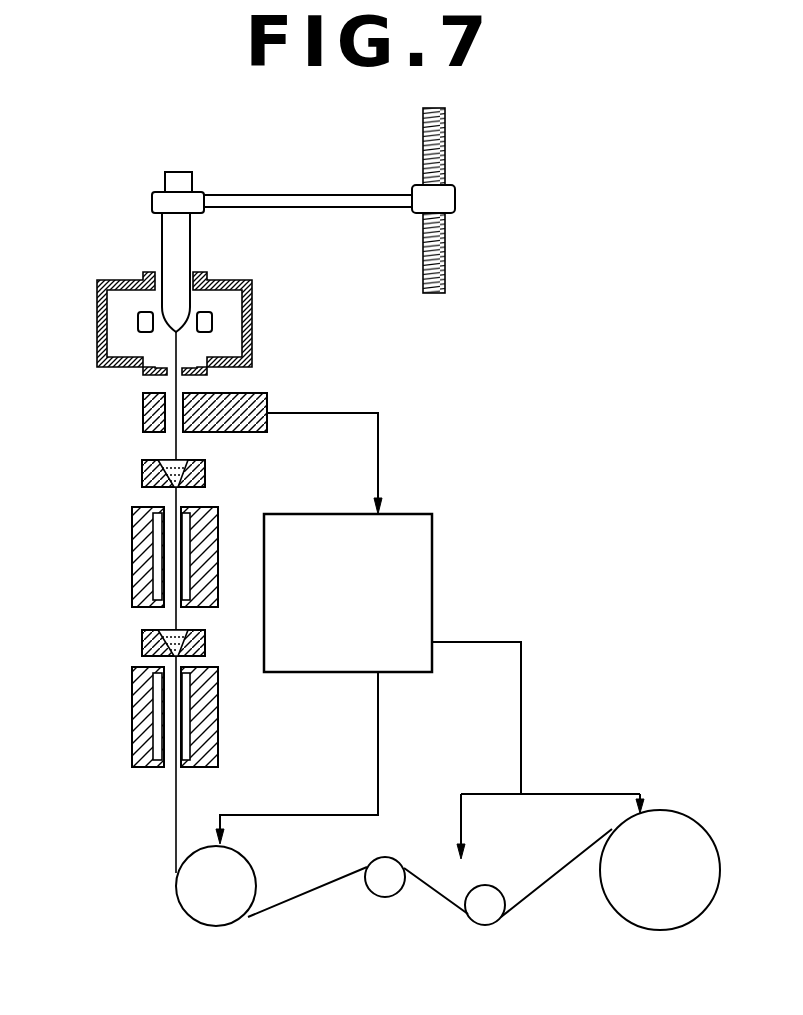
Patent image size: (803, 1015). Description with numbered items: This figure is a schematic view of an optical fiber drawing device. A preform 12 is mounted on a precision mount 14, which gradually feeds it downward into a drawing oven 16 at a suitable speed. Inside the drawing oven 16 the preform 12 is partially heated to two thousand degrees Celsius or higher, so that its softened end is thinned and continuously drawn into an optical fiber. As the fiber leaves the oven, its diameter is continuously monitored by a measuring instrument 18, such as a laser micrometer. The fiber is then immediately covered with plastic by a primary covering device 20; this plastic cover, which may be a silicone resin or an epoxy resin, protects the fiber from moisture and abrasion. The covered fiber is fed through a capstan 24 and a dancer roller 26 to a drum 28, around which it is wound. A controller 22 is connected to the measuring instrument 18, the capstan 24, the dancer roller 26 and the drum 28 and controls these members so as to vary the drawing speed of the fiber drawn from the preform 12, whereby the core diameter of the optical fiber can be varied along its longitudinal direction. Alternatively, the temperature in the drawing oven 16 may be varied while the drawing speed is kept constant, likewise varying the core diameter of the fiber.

The preform 12 is at (162, 245).
The precision mount 14 is at (312, 193).
The drawing oven 16 is at (253, 320).
The measuring instrument 18 is at (143, 418).
The primary covering device 20 is at (113, 775).
The controller 22 is at (432, 551).
The capstan 24 is at (215, 918).
The dancer roller 26 is at (478, 910).
The drum 28 is at (653, 920).